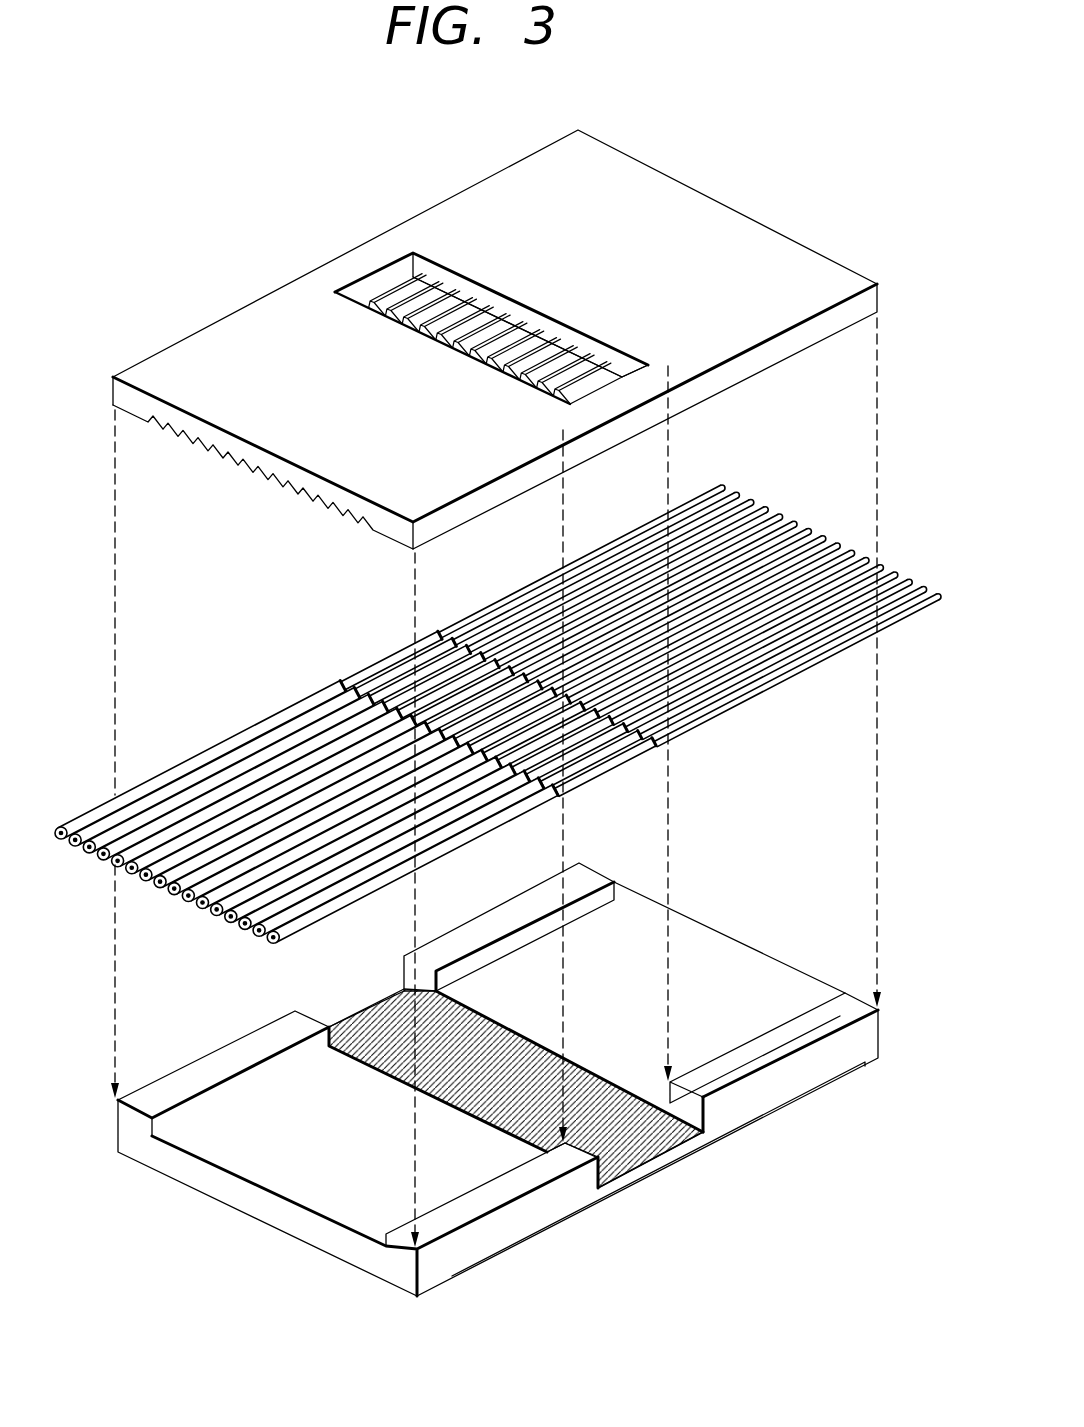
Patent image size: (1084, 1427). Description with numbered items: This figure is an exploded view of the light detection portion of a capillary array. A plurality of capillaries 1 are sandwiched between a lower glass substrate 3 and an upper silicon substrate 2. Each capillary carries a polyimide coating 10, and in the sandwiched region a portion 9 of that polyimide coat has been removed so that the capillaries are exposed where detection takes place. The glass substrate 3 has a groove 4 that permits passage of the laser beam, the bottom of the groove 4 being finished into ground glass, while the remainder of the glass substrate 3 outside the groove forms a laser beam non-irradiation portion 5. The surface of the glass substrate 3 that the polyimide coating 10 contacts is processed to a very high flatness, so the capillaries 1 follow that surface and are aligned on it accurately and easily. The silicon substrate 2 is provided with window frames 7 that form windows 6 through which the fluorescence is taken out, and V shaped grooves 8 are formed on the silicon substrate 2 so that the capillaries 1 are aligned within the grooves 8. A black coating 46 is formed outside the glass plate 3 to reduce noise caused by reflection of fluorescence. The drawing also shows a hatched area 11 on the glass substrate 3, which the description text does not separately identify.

The capillaries 1 is at (755, 687).
The silicon substrate 2 is at (810, 249).
The glass substrate 3 is at (465, 1257).
The groove 4 is at (622, 1182).
The laser beam non-irradiation portion 5 is at (807, 1073).
The windows 6 is at (622, 384).
The window frames 7 is at (393, 300).
The V shaped grooves 8 is at (152, 426).
The portion being removed of polyimide coat 9 is at (392, 662).
The polyimide coating 10 is at (280, 716).
The adhesive layer 11 is at (647, 1138).
The black coating 46 is at (558, 1233).